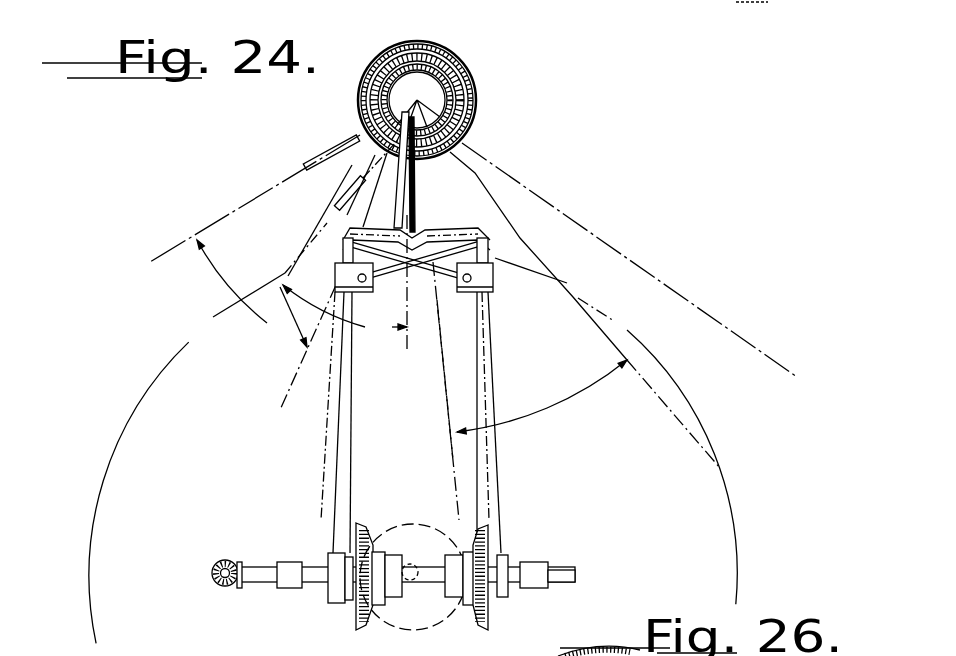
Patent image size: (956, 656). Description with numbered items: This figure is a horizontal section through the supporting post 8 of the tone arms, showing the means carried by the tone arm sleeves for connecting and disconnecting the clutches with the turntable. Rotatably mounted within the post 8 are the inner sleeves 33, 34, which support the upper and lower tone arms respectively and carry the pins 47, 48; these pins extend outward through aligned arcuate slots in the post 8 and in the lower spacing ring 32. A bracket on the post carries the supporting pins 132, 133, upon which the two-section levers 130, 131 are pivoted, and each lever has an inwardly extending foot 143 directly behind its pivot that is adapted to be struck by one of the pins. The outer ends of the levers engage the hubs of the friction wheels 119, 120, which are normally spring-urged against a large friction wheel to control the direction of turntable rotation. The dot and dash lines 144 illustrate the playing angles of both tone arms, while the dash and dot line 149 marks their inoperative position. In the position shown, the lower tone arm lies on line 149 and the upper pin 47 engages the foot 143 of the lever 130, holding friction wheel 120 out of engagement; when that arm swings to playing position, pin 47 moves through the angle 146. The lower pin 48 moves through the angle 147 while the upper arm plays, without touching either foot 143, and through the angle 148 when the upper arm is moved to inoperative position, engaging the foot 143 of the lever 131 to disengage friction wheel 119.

The supporting post 8 is at (445, 68).
The spacing ring 32 is at (478, 81).
The inner sleeve 33 is at (430, 45).
The inner sleeve 34 is at (447, 60).
The pin 47 is at (402, 192).
The pin 48 is at (418, 205).
The friction wheel 119 is at (360, 630).
The friction wheel 120 is at (477, 630).
The lever 130 is at (498, 278).
The lever 131 is at (340, 281).
The supporting pin 132 is at (360, 286).
The supporting pin 133 is at (455, 292).
The foot 143 is at (421, 226).
The dot and dash lines 144 is at (542, 397).
The dot and dash lines 146 is at (281, 293).
The dot and dash line 147 is at (387, 323).
The dot and dash line 148 is at (443, 362).
The dash and dot line 149 is at (625, 260).